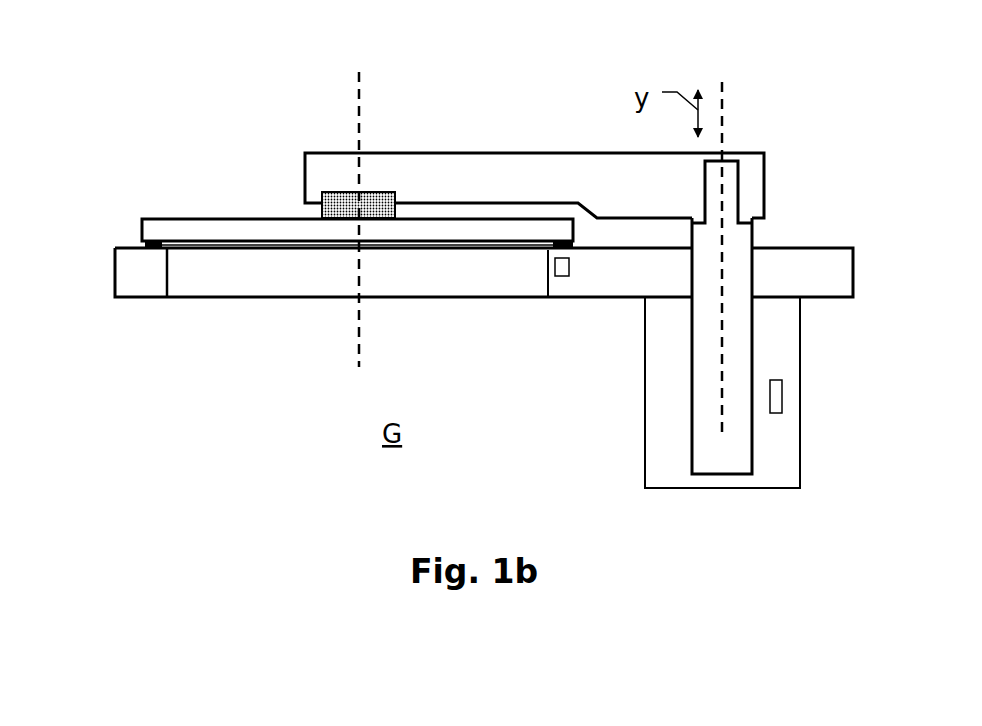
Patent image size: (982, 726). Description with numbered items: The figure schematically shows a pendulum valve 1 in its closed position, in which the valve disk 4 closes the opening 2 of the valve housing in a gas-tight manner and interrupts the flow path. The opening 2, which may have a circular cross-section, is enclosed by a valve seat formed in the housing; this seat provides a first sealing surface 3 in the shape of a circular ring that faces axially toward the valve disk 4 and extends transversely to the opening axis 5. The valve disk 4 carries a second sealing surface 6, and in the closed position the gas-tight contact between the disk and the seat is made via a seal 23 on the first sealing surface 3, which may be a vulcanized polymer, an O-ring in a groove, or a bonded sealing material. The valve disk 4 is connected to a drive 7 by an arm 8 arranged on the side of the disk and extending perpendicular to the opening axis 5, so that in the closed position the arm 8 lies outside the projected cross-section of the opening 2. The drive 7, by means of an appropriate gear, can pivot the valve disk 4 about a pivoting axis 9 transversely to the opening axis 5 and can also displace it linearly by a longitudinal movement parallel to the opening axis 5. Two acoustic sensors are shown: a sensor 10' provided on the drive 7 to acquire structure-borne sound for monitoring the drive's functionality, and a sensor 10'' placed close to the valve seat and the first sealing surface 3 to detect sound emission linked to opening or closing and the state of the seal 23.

The pendulum valve 1 is at (241, 72).
The opening 2 is at (248, 283).
The sealing surface 3 is at (145, 260).
The valve disk 4 is at (257, 230).
The opening axis 5 is at (359, 120).
The second sealing surface 6 is at (132, 241).
The drive 7 is at (648, 428).
The arm 8 is at (572, 165).
The pivoting axis 9 is at (722, 128).
The acoustic sensor 10' is at (821, 404).
The acoustic sensor 10'' is at (521, 315).
The seal 23 is at (155, 240).